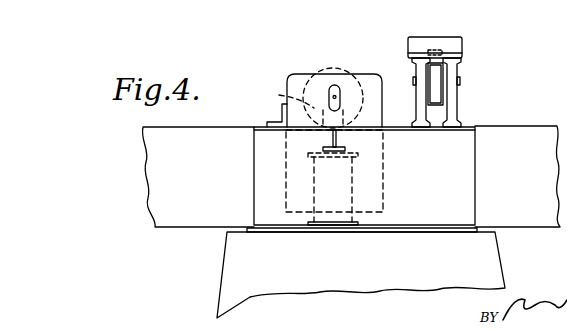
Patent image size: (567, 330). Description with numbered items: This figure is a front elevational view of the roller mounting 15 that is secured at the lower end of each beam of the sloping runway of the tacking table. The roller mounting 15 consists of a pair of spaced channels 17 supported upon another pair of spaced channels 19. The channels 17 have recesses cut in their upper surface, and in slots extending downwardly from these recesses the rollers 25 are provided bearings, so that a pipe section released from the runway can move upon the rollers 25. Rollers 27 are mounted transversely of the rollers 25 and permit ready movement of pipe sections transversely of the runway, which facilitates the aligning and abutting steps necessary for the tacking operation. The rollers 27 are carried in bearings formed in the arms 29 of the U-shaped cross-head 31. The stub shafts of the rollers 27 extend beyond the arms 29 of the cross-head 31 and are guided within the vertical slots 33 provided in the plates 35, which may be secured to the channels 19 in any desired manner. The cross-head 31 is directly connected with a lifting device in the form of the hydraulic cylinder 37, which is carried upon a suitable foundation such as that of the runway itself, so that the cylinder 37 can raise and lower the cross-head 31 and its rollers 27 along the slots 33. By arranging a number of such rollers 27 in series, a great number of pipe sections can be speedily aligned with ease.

The roller mounting 15 is at (310, 66).
The spaced channels 17 is at (418, 117).
The spaced channels 19 is at (478, 148).
The rollers 25 is at (444, 103).
The rollers 27 is at (338, 67).
The arms 29 is at (287, 98).
The U-shaped cross-head 31 is at (327, 137).
The vertical slots 33 is at (339, 86).
The plates 35 is at (380, 84).
The hydraulic cylinder 37 is at (356, 182).